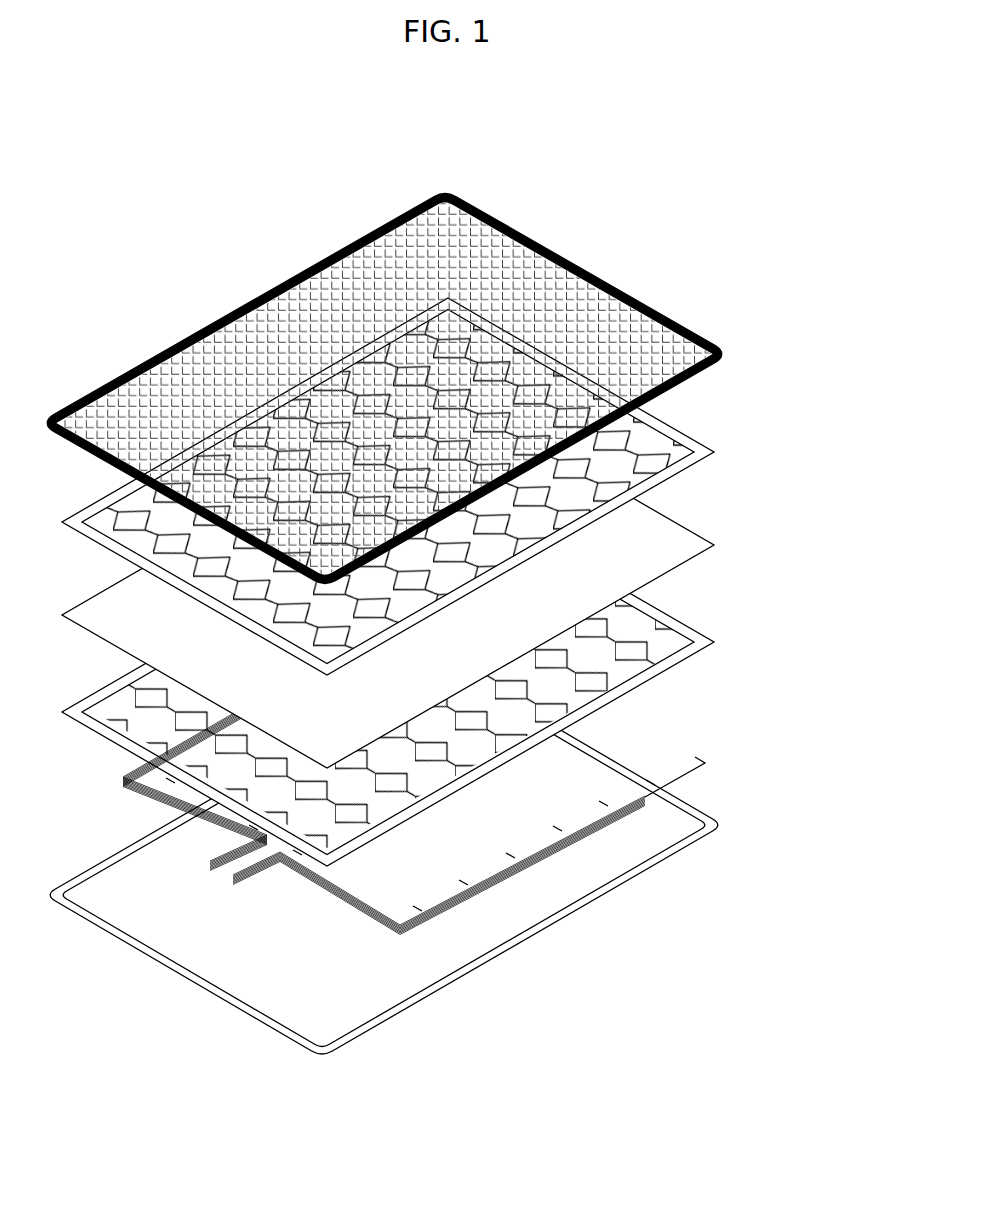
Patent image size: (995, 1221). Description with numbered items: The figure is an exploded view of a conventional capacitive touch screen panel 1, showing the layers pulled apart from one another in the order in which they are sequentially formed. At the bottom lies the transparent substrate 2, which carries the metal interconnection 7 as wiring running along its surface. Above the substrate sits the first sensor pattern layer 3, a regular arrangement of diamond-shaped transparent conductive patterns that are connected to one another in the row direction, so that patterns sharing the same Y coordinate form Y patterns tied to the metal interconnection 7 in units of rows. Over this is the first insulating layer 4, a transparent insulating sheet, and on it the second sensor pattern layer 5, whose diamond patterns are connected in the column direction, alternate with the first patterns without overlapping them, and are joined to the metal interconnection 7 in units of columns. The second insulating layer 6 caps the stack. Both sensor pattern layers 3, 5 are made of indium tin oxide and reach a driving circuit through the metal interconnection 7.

The touch screen panel 1 is at (630, 168).
The transparent substrate 2 is at (572, 912).
The first sensor pattern layer 3 is at (677, 625).
The first insulating layer 4 is at (650, 540).
The second sensor pattern layer 5 is at (685, 438).
The second insulating layer 6 is at (684, 325).
The metal interconnection 7 is at (603, 808).